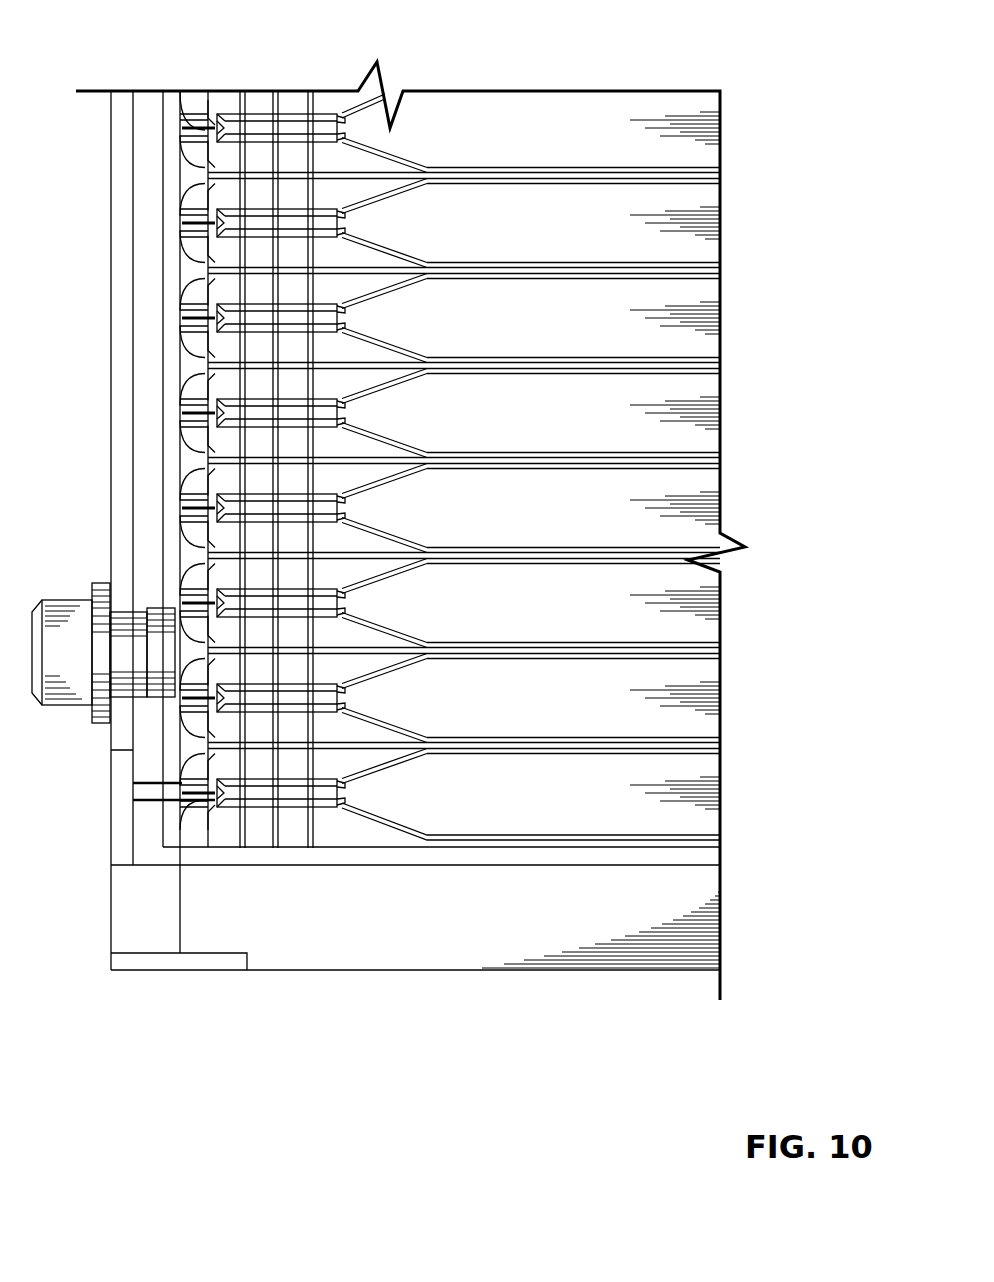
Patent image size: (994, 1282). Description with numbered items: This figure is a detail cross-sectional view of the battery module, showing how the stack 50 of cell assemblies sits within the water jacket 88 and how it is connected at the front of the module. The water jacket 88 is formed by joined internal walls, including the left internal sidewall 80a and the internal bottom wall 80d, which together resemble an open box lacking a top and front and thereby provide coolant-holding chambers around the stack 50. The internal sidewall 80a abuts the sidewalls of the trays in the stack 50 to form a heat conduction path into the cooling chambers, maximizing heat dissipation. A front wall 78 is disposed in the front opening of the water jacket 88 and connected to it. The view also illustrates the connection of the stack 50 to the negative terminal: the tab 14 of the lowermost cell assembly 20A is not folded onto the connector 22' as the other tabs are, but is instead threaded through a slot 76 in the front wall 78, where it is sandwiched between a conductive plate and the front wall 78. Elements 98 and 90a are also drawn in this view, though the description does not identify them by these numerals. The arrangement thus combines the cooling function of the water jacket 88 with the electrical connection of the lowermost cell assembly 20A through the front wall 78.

The stack 50 is at (484, 64).
The left internal sidewall 80a is at (178, 268).
The outer wall 98 is at (115, 212).
The front wall 78 is at (145, 328).
The support plate 90a is at (168, 433).
The slot 76 is at (150, 790).
The tab 14 is at (168, 800).
The connector 22' is at (260, 564).
The lowermost cell assembly 20A is at (340, 810).
The water jacket 88 is at (435, 932).
The internal bottom wall 80d is at (552, 858).